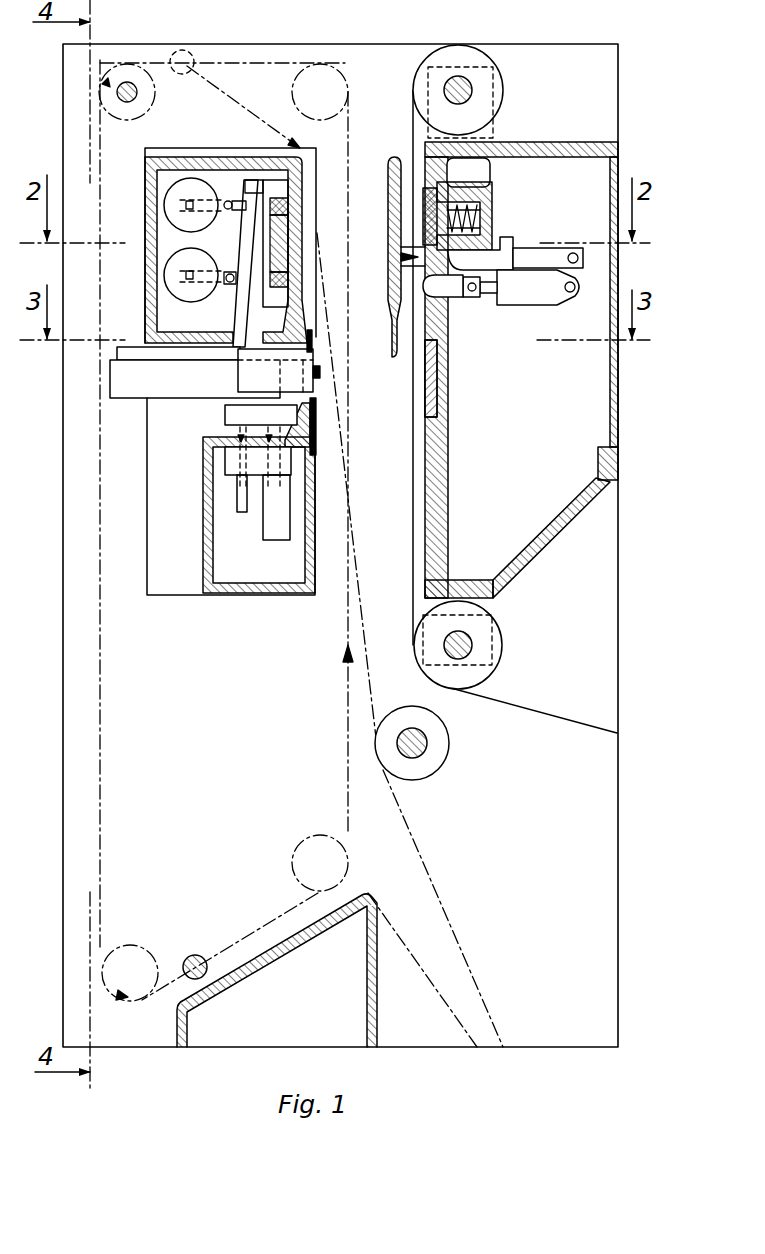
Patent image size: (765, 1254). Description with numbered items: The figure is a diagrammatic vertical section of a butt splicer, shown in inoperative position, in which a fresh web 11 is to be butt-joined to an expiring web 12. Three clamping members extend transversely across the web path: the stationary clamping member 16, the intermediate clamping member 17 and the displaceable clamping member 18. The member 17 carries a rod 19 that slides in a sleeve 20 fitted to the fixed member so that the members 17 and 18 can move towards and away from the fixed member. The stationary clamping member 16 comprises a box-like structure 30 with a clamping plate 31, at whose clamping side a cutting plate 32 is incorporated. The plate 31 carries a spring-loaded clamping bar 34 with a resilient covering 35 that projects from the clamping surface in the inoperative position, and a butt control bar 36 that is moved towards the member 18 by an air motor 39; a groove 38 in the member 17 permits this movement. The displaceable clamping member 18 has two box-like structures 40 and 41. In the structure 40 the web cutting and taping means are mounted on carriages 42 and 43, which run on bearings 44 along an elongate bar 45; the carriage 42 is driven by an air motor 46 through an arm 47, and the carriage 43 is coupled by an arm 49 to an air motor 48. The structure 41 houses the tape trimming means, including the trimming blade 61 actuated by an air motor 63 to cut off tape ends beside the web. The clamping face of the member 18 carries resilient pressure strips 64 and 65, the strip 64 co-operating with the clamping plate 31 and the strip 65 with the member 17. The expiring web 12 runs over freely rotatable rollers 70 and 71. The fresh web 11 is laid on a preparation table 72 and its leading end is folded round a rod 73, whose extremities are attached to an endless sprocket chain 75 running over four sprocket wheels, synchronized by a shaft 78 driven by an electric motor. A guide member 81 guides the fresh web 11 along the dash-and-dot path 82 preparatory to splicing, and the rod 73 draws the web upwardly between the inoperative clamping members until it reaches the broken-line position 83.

The fresh web 11 is at (440, 990).
The expiring web 12 is at (570, 728).
The stationary clamping member 16 is at (547, 418).
The intermediate clamping member 17 is at (395, 158).
The displaceable clamping member 18 is at (192, 390).
The rod 19 is at (550, 252).
The sleeve 20 is at (500, 247).
The box-like structure 30 is at (530, 152).
The clamping plate 31 is at (440, 470).
The cutting plate 32 is at (437, 375).
The spring-loaded clamping bar 34 is at (492, 202).
The resilient covering 35 is at (468, 172).
The butt control bar 36 is at (455, 297).
The groove 38 is at (395, 296).
The air motor 39 is at (525, 290).
The box-like structure 40 is at (195, 163).
The box-like structure 41 is at (256, 590).
The carriage 42 is at (290, 195).
The carriage 43 is at (290, 226).
The bearings 44 is at (290, 280).
The elongate bar 45 is at (286, 255).
The air motor 46 is at (165, 203).
The arm 47 is at (230, 203).
The air motor 48 is at (165, 288).
The arm 49 is at (228, 272).
The trimming blade 61 is at (318, 405).
The air motor 63 is at (285, 527).
The pressure strip 64 is at (312, 432).
The pressure strip 65 is at (312, 340).
The roller 70 is at (488, 665).
The roller 71 is at (485, 88).
The preparation table 72 is at (268, 975).
The rod 73 is at (192, 955).
The endless sprocket chain 75 is at (102, 815).
The shaft 78 is at (127, 82).
The guide member 81 is at (447, 752).
The path of the fresh web 82 is at (460, 958).
The position of the rod 83 is at (185, 55).